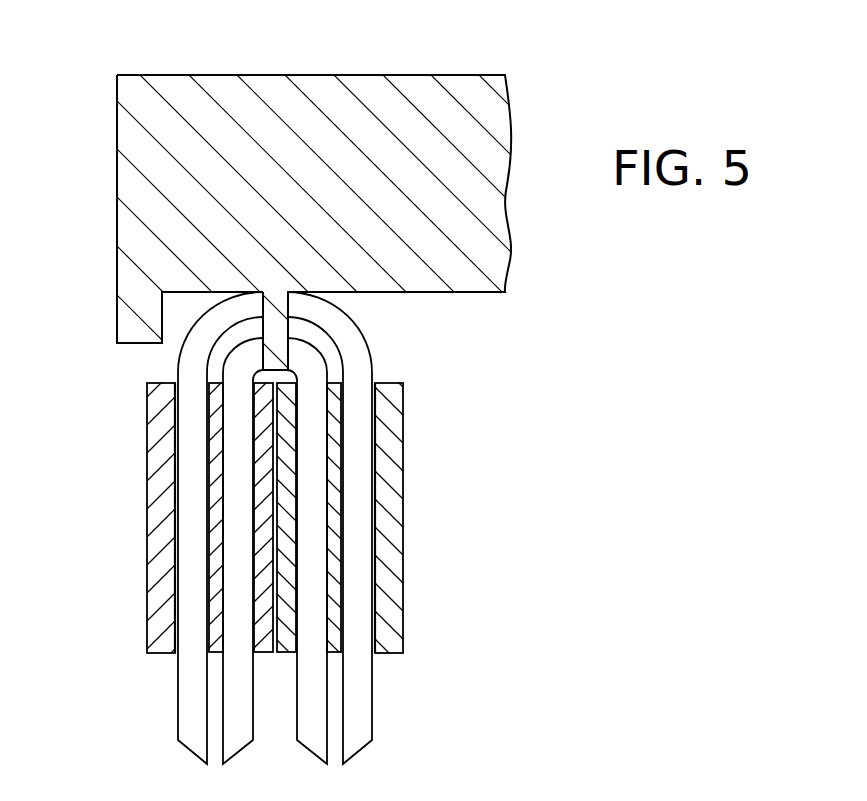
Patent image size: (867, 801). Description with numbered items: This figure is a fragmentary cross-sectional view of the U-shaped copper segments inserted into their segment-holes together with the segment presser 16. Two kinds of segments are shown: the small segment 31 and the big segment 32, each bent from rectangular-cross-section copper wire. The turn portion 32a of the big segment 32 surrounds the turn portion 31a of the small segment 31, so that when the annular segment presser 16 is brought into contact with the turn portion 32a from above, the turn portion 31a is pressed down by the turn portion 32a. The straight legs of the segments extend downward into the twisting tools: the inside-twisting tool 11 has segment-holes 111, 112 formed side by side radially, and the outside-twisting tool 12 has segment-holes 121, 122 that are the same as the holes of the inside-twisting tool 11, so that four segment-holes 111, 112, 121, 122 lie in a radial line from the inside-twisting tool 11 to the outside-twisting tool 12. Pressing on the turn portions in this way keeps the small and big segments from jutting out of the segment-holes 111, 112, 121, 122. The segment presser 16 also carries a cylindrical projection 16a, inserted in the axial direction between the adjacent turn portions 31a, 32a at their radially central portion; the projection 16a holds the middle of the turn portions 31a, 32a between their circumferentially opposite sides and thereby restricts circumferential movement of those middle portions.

The segment presser 16 is at (392, 200).
The cylindrical projection 16a is at (268, 322).
The big segment 32 is at (336, 528).
The turn portion of big segment 32a is at (315, 317).
The small segment 31 is at (359, 550).
The turn portion of small segment 31a is at (303, 365).
The outside-twisting tool 12 is at (115, 518).
The segment-hole 121 is at (222, 512).
The segment-hole 122 is at (174, 573).
The inside-twisting tool 11 is at (436, 518).
The segment-hole 112 is at (333, 616).
The segment-hole 111 is at (378, 597).